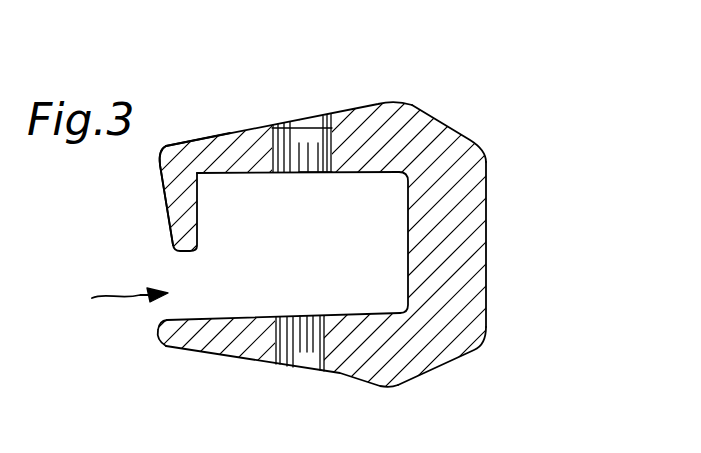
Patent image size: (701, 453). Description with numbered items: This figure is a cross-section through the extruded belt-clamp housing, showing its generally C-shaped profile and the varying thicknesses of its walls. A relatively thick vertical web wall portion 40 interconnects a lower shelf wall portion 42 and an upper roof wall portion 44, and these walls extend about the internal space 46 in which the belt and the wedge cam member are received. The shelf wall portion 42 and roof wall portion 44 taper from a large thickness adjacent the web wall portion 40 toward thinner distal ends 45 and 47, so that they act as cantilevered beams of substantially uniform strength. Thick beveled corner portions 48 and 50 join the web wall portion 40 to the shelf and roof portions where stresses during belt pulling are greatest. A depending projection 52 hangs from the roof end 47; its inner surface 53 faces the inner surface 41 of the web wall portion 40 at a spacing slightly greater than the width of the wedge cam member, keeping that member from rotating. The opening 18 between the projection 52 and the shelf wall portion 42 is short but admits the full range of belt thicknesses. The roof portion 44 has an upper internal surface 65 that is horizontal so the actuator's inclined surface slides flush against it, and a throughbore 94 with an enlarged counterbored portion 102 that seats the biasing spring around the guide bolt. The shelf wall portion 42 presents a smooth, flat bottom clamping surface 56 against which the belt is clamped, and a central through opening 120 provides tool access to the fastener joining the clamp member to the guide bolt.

The opening 18 is at (110, 298).
The vertical web wall portion 40 is at (475, 222).
The inner surface of the web wall portion 41 is at (408, 250).
The lower shelf wall portion 42 is at (363, 378).
The upper roof wall portion 44 is at (395, 108).
The distal end of the lower shelf wall portion 45 is at (183, 342).
The internal space 46 is at (390, 221).
The distal end of the upper roof wall portion 47 is at (183, 157).
The beveled corner portion 48 is at (452, 342).
The beveled corner portion 50 is at (447, 124).
The depending projection 52 is at (167, 210).
The inner surface of the projection 53 is at (198, 215).
The bottom clamping surface 56 is at (358, 313).
The upper internal surface 65 is at (240, 173).
The throughbore 94 is at (326, 163).
The enlarged counterbored portion 102 is at (308, 123).
The central through opening 120 is at (300, 370).